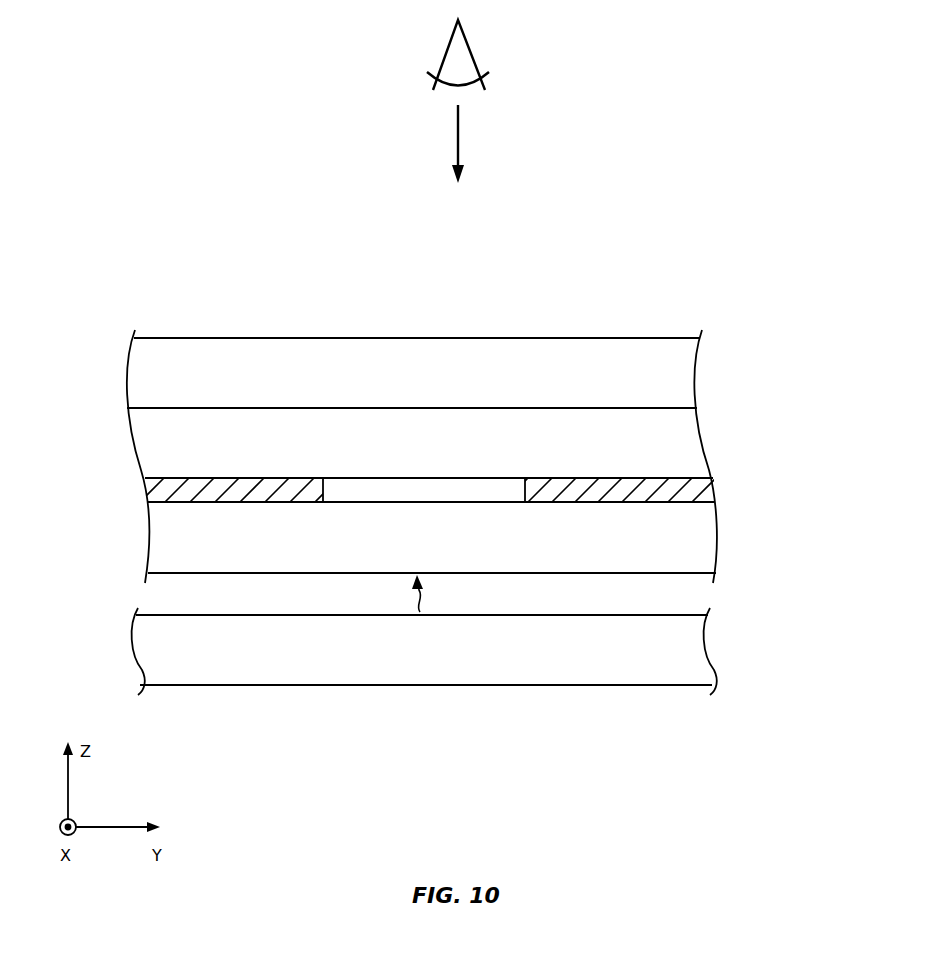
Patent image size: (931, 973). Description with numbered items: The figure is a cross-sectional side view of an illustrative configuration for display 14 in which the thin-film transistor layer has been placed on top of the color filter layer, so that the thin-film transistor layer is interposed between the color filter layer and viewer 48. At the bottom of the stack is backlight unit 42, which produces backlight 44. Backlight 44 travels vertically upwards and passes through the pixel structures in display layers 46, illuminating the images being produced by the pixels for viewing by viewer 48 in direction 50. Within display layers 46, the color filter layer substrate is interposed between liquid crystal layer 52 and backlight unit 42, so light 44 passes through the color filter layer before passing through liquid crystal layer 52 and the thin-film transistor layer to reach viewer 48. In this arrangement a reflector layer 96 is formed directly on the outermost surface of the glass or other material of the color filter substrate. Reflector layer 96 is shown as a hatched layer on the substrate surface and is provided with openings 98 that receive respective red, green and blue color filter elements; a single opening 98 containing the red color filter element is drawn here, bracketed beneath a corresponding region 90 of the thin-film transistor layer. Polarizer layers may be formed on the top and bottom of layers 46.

The display 14 is at (617, 155).
The backlight unit 42 is at (700, 650).
The backlight 44 is at (425, 603).
The display layers 46 is at (450, 438).
The viewer 48 is at (472, 53).
The direction 50 is at (460, 148).
The liquid crystal layer 52 is at (142, 445).
The pixel region 90 is at (525, 328).
The reflector layer 96 is at (150, 490).
The openings 98 is at (525, 468).